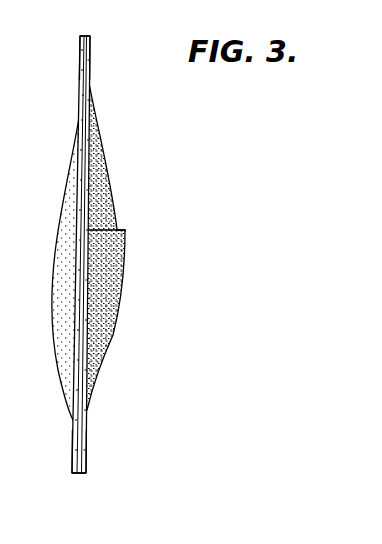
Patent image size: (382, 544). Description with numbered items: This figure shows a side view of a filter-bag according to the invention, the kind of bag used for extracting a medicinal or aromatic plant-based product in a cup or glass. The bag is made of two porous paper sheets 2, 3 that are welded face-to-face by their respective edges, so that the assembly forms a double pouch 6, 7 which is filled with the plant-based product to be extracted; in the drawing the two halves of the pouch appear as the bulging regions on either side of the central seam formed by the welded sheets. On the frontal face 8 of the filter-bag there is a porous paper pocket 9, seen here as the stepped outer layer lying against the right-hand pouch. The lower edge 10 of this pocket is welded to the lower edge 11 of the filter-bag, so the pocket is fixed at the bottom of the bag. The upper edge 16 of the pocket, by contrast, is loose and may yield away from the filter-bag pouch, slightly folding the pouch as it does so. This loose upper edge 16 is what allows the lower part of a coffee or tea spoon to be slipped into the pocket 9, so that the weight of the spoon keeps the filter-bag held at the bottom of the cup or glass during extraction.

The porous paper sheet 2 is at (90, 72).
The porous paper sheet 3 is at (80, 79).
The pouch 6 is at (117, 207).
The pouch 7 is at (58, 259).
The frontal face 8 is at (120, 158).
The porous paper pocket 9 is at (100, 286).
The lower edge of the pocket 10 is at (78, 474).
The lower edge of the filter-bag 11 is at (76, 474).
The upper edge of the pocket 16 is at (118, 227).